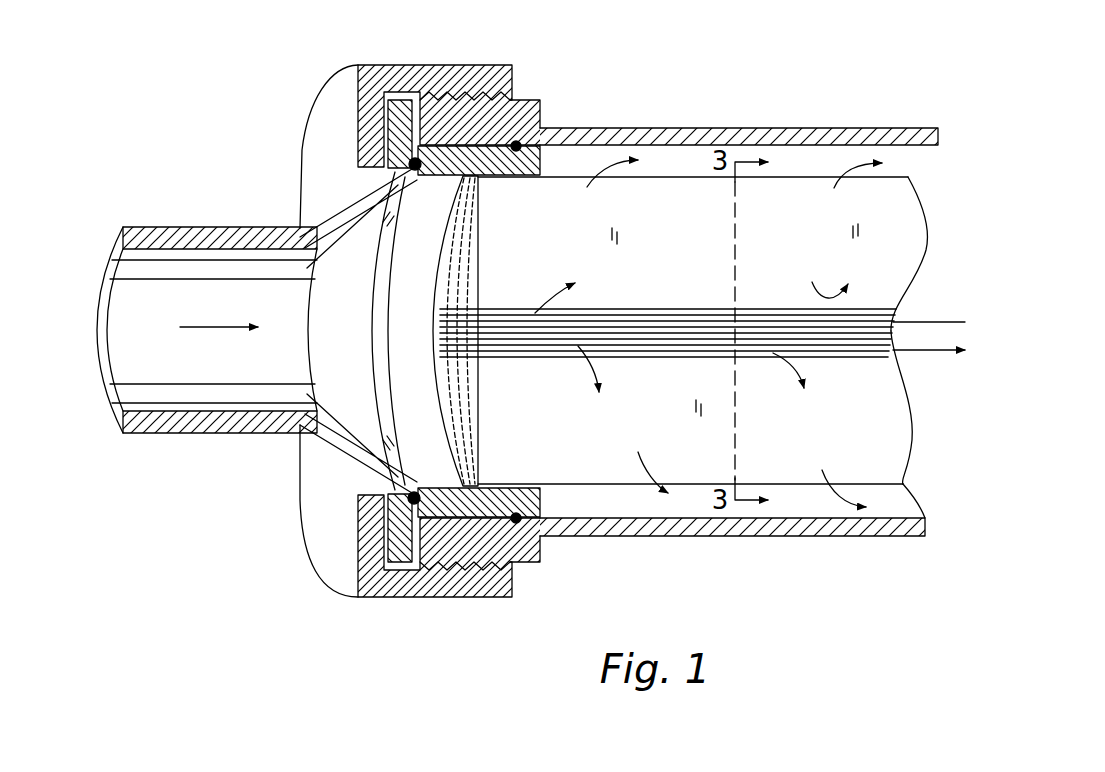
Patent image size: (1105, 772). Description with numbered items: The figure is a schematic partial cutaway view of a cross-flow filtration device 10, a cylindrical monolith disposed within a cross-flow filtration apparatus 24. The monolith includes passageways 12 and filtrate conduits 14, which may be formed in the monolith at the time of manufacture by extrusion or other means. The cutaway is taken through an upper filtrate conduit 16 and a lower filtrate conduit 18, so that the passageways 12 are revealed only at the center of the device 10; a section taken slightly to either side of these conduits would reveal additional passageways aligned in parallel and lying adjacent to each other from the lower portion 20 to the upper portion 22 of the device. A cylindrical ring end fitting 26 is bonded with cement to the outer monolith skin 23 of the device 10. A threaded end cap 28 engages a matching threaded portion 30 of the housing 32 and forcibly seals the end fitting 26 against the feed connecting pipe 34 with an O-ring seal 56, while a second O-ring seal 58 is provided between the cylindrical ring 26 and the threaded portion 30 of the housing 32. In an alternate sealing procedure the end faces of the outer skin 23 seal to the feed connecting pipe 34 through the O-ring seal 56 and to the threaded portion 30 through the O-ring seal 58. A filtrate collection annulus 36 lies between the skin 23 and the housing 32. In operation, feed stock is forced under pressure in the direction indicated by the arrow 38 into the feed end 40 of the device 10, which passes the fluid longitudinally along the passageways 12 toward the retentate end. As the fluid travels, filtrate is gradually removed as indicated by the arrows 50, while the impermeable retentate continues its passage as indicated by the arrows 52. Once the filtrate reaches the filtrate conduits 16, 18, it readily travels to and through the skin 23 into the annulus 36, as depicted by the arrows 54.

The cross-flow filtration device 10 is at (1002, 183).
The passageways 12 is at (648, 322).
The filtrate conduits 14 is at (477, 238).
The upper filtrate conduit 16 is at (899, 259).
The lower filtrate conduit 18 is at (888, 438).
The lower portion 20 is at (873, 489).
The upper portion 22 is at (811, 176).
The outer monolith skin 23 is at (783, 497).
The cross-flow filtration apparatus 24 is at (247, 111).
The cylindrical ring end fitting 26 is at (386, 316).
The threaded end cap 28 is at (425, 64).
The threaded portion 30 is at (516, 107).
The housing 32 is at (673, 128).
The feed connecting pipe 34 is at (196, 228).
The filtrate collection annulus 36 is at (605, 506).
The arrow 38 is at (215, 327).
The feed end 40 is at (436, 290).
The arrows 50 is at (548, 300).
The arrows 52 is at (920, 320).
The arrows 54 is at (718, 323).
The O-ring seal 56 is at (413, 170).
The second O-ring seal 58 is at (518, 152).